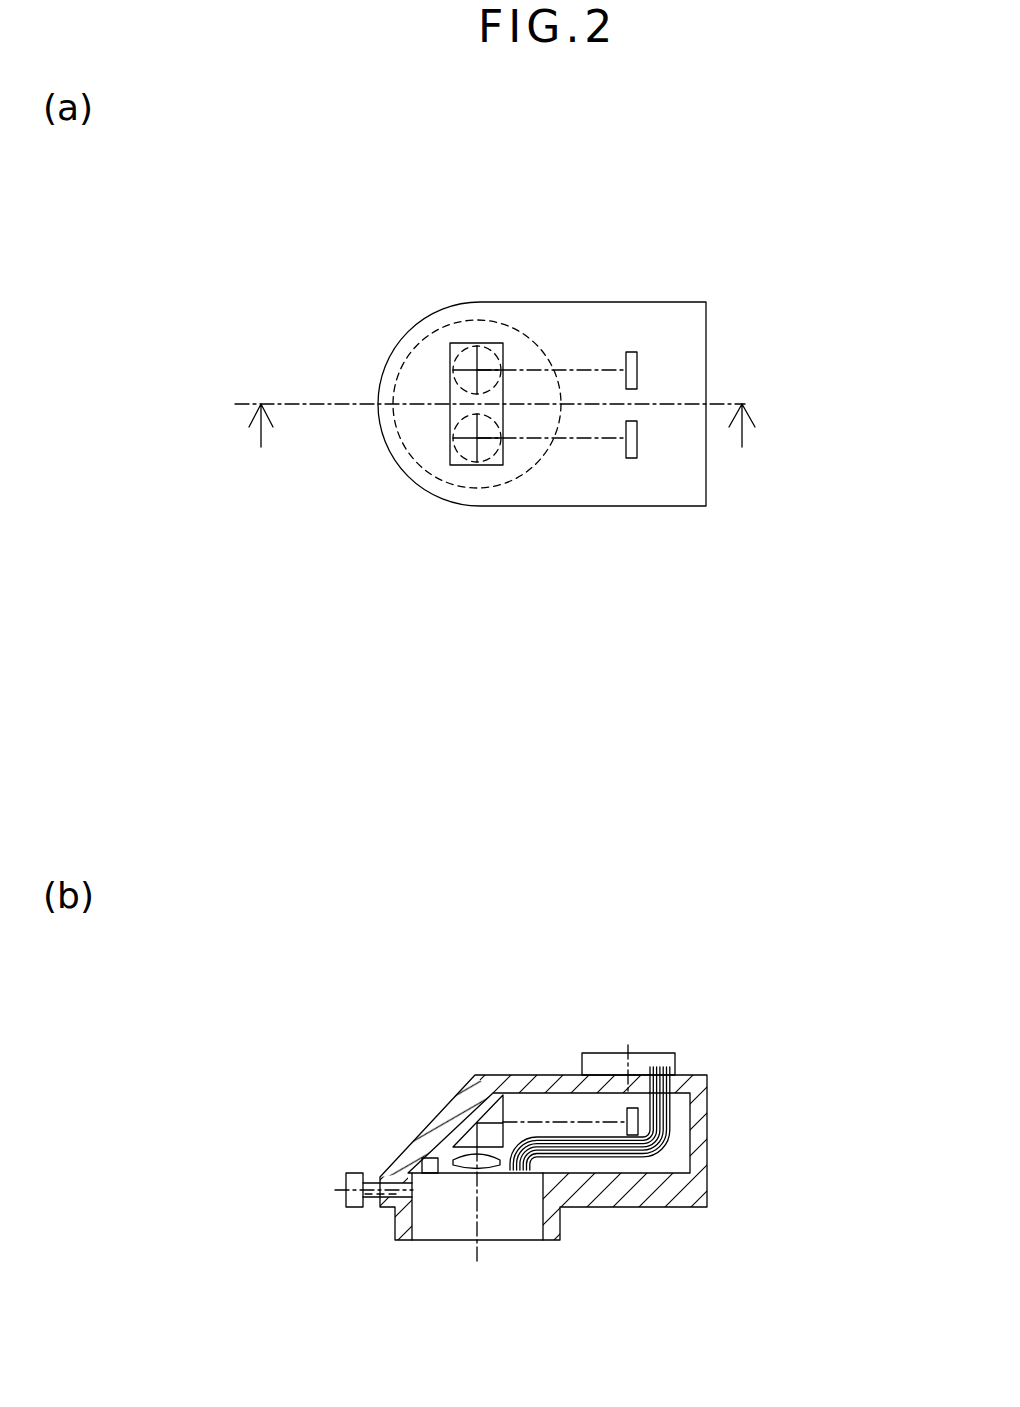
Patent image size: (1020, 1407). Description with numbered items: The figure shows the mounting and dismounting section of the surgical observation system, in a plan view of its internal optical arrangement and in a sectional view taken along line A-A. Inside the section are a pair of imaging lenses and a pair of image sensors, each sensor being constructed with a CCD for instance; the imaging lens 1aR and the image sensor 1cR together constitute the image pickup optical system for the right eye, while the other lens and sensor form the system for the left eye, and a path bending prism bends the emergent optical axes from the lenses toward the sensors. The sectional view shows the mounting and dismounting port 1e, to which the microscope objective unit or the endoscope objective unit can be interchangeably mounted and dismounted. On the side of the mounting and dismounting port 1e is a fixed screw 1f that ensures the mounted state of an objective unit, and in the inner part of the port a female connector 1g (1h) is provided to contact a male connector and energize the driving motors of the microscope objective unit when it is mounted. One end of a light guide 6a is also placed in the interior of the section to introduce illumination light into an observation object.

The imaging lens 1aR is at (453, 438).
The image sensor 1cR is at (637, 436).
The mounting and dismounting port 1e is at (412, 1227).
The fixed screw 1f is at (347, 1179).
The female connector 1g is at (346, 1129).
The female connector 1h is at (426, 1157).
The light guide 6a is at (663, 1118).